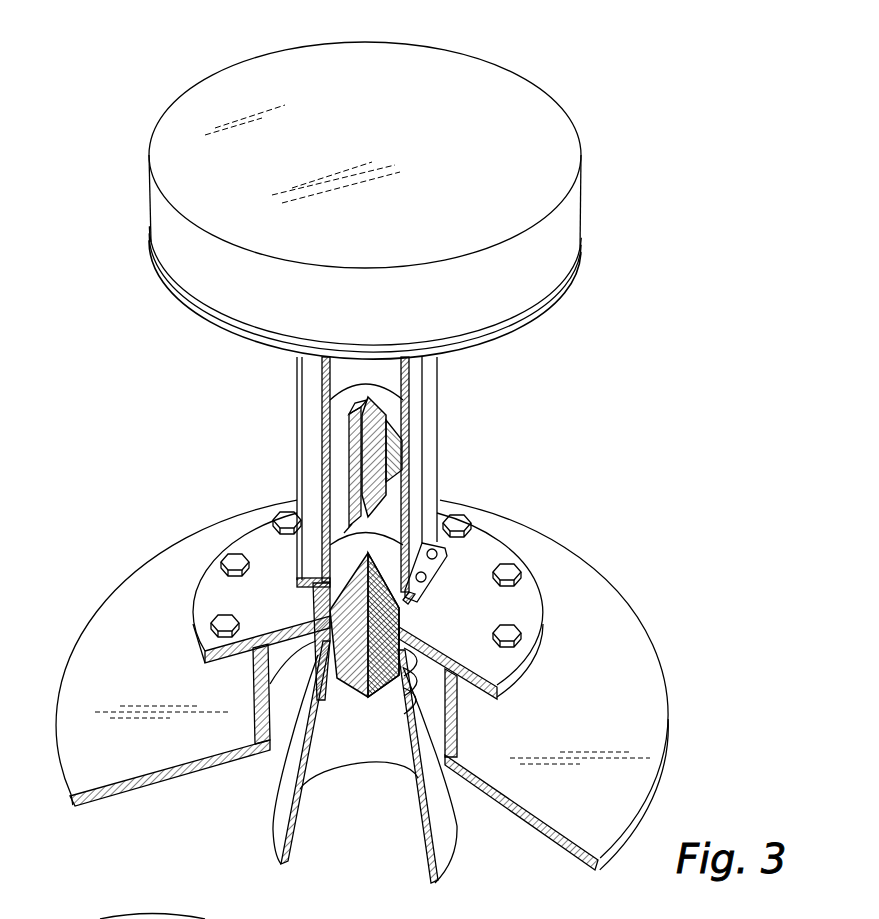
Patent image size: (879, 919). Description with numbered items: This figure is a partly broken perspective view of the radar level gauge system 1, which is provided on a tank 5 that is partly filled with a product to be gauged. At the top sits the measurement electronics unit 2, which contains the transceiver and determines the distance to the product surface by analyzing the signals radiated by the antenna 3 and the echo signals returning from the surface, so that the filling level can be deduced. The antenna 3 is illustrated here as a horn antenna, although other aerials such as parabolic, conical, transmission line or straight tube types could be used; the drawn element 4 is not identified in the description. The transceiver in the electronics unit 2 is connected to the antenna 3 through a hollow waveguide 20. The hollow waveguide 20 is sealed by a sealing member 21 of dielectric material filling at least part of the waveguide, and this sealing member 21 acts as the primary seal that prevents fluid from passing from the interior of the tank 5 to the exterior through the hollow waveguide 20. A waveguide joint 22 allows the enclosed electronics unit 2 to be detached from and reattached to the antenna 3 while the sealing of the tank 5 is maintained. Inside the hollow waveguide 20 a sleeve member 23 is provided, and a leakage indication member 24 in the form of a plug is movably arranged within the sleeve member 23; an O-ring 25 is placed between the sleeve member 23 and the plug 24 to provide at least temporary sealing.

The radar level gauge system 1 is at (628, 76).
The measurement electronics unit 2 is at (548, 183).
The antenna device 3 is at (447, 840).
The front leg blade 4 is at (275, 825).
The tank 5 is at (637, 697).
The hollow waveguide 20 is at (413, 543).
The sealing member 21 is at (340, 686).
The waveguide joint 22 is at (440, 590).
The sleeve member 23 is at (393, 407).
The leakage indication member 24 is at (348, 415).
The O-ring 25 is at (388, 457).